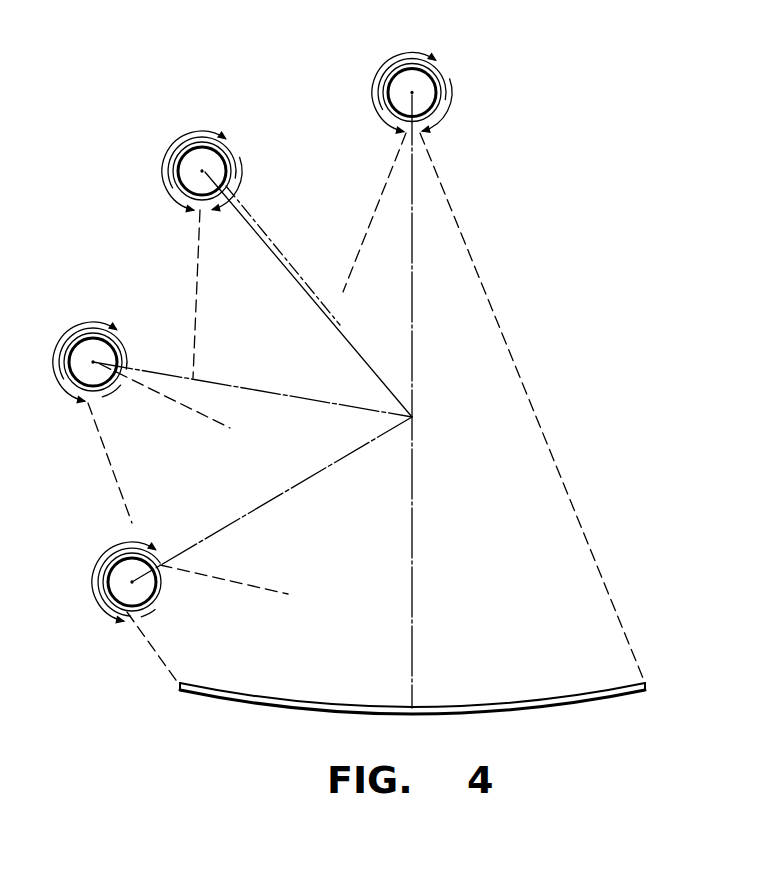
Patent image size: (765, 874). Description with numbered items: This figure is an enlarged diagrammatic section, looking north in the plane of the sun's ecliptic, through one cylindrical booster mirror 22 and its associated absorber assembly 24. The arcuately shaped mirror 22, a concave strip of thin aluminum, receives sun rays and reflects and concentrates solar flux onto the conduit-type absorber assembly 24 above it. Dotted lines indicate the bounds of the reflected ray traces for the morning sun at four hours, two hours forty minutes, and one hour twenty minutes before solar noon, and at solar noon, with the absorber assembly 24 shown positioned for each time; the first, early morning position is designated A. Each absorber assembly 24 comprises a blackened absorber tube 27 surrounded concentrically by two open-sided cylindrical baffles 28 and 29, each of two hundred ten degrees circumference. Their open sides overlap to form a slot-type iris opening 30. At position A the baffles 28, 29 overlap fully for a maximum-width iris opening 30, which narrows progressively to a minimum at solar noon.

The arcuately shaped mirror 22 is at (497, 705).
The absorber assembly 24 is at (450, 71).
The absorber tube 27 is at (409, 66).
The inner cylindrical baffle 28 is at (447, 100).
The outer cylindrical baffle 29 is at (372, 88).
The iris opening 30 is at (425, 130).
The early morning position A is at (88, 597).